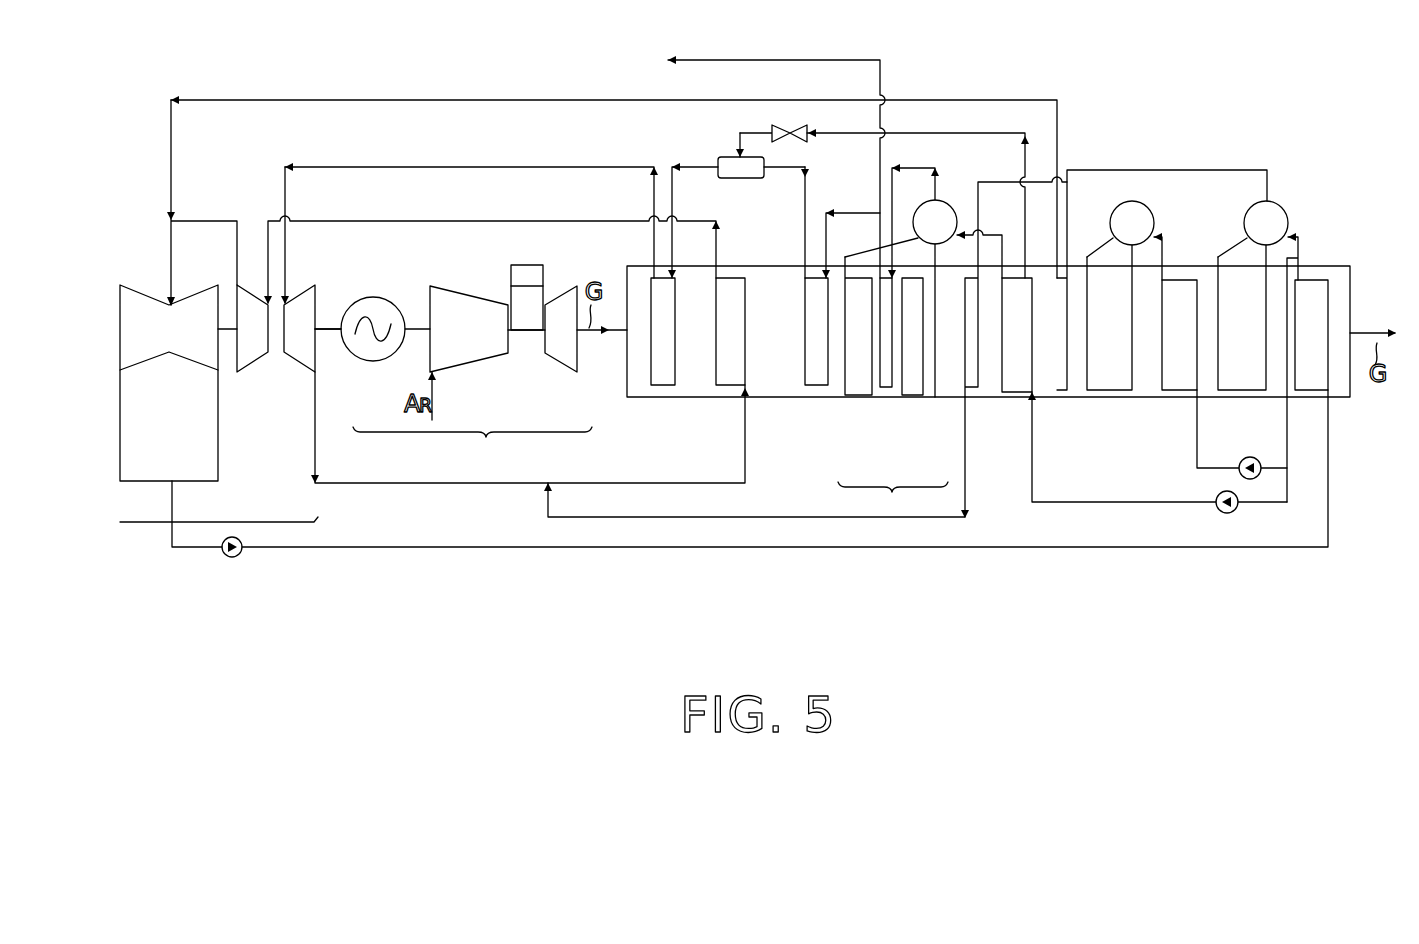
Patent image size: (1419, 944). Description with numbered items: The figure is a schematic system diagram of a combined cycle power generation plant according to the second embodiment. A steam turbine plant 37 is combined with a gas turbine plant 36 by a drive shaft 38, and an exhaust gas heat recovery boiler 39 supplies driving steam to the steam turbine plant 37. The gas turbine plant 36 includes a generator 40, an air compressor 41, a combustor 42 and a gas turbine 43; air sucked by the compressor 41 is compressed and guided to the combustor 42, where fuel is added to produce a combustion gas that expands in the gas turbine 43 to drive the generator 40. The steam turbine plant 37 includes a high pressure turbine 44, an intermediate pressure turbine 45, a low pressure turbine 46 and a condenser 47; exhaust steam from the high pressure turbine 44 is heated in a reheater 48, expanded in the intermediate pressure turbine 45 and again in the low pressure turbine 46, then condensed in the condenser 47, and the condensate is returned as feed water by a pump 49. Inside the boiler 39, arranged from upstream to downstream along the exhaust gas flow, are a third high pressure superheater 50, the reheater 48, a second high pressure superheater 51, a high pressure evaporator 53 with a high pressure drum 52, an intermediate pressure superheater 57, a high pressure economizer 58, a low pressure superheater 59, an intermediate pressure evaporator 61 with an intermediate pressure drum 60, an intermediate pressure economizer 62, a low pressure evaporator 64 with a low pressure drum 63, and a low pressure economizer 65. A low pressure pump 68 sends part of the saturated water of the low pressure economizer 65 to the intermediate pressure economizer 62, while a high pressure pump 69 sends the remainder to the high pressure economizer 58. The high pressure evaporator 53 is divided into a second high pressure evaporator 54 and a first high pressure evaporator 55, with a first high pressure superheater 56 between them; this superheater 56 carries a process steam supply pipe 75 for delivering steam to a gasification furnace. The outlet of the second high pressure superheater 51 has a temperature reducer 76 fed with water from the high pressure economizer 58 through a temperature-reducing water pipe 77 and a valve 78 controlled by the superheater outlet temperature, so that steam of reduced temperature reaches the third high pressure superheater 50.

The gas turbine plant 36 is at (472, 448).
The steam turbine plant 37 is at (219, 537).
The drive shaft 38 is at (327, 326).
The exhaust gas heat recovery boiler 39 is at (775, 400).
The generator 40 is at (373, 362).
The air compressor 41 is at (458, 366).
The combustor 42 is at (527, 285).
The gas turbine 43 is at (565, 366).
The high pressure turbine 44 is at (290, 363).
The intermediate pressure turbine 45 is at (238, 372).
The low pressure turbine 46 is at (196, 363).
The condenser 47 is at (128, 481).
The reheater 48 is at (726, 390).
The pump 49 is at (236, 558).
The third high pressure superheater 50 is at (657, 390).
The second high pressure superheater 51 is at (810, 390).
The high pressure drum 52 is at (948, 202).
The high pressure evaporator 53 is at (893, 502).
The second high pressure evaporator 54 is at (857, 398).
The first high pressure evaporator 55 is at (912, 398).
The first high pressure superheater 56 is at (884, 390).
The intermediate pressure superheater 57 is at (970, 390).
The high pressure economizer 58 is at (1010, 395).
The low pressure superheater 59 is at (1060, 393).
The intermediate pressure drum 60 is at (1150, 212).
The intermediate pressure evaporator 61 is at (1112, 392).
The intermediate pressure economizer 62 is at (1178, 392).
The low pressure drum 63 is at (1285, 212).
The low pressure evaporator 64 is at (1232, 392).
The low pressure economizer 65 is at (1308, 392).
The low pressure pump 68 is at (1236, 472).
The high pressure pump 69 is at (1235, 512).
The process steam supply pipe 75 is at (798, 57).
The temperature reducer 76 is at (745, 181).
The high-pressure superheater temperature-reducing water pipe 77 is at (947, 133).
The valve 78 is at (788, 118).